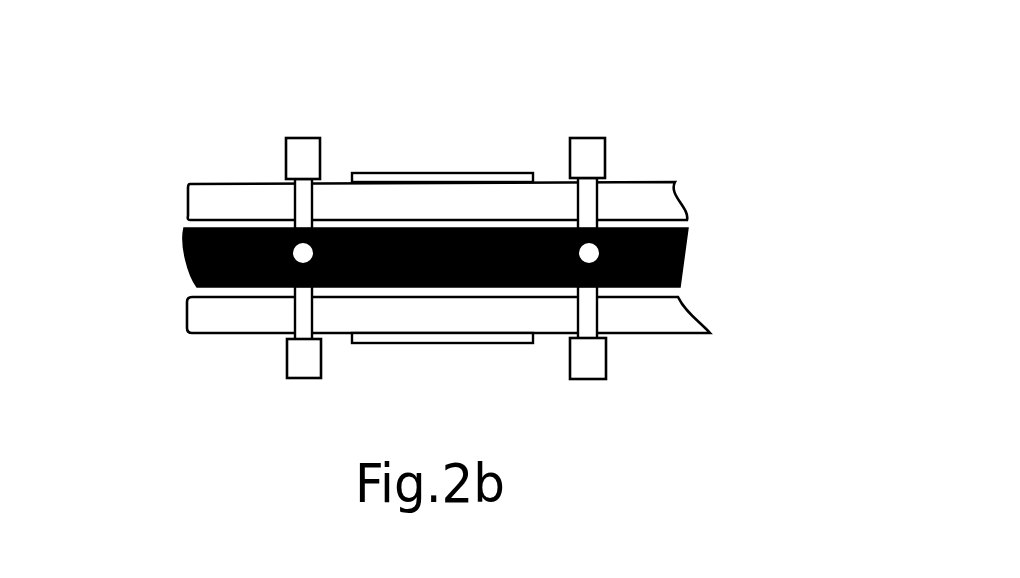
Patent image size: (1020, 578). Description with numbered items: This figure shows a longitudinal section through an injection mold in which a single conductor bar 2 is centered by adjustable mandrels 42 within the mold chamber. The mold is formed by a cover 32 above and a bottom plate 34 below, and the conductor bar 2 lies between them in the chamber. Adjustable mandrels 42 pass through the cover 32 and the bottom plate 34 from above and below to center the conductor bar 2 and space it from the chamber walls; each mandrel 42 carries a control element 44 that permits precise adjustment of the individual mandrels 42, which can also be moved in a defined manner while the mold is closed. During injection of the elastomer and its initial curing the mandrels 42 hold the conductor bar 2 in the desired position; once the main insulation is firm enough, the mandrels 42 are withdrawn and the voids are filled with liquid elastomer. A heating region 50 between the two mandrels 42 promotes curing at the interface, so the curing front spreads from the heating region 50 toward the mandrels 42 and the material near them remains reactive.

The conductor bar 2 is at (183, 256).
The cover 32 is at (233, 205).
The bottom plate 34 is at (238, 319).
The adjustable mandrel 42 is at (588, 203).
The control element 44 is at (592, 158).
The heating region 50 is at (402, 173).